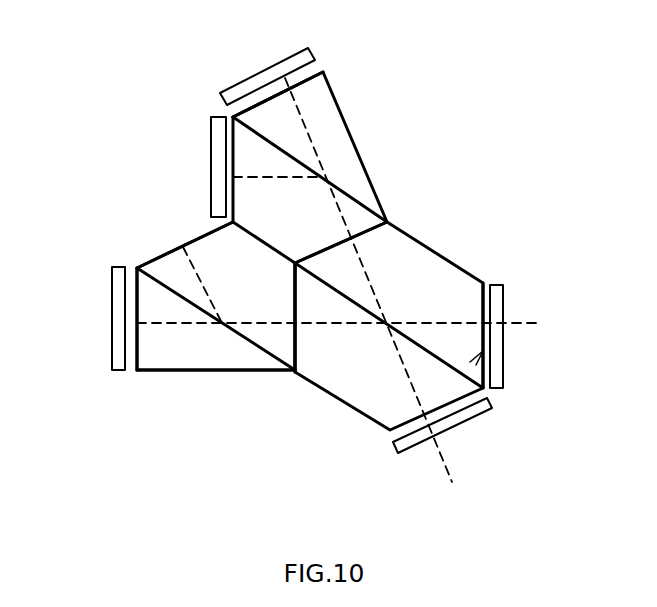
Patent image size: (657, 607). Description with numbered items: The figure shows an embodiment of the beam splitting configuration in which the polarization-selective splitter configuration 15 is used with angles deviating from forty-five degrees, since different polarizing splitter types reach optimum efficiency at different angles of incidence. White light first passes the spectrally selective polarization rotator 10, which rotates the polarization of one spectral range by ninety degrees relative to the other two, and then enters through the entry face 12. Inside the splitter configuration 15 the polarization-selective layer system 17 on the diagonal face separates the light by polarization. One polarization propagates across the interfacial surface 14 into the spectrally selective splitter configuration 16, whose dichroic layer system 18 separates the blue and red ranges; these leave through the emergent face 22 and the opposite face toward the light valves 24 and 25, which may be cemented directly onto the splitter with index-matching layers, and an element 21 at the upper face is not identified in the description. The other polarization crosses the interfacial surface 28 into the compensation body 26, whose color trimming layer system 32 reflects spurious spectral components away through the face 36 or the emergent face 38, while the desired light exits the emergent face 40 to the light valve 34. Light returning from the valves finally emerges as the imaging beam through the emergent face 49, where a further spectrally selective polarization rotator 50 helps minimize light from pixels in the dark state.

The spectrally selective polarization rotator 10 is at (497, 302).
The entry face 12 is at (470, 360).
The interfacial surface 14 is at (363, 233).
The polarization-selective splitter configuration 15 is at (323, 278).
The spectrally selective splitter configuration 16 is at (288, 130).
The polarization-selective layer system 17 is at (358, 303).
The dichroic or spectrally selective layer system 18 is at (337, 183).
The top window plate 21 is at (257, 102).
The emergent face 22 is at (232, 145).
The light valve 24 is at (292, 68).
The light valve 25 is at (220, 173).
The compensation body 26 is at (251, 278).
The interfacial surface 28 is at (297, 342).
The color trimming layer system 32 is at (245, 338).
The light valve 34 is at (118, 330).
The face 36 is at (162, 372).
The emergent face 38 is at (167, 252).
The emergent face 40 is at (137, 287).
The emergent face 49 is at (417, 413).
The spectrally selective polarization rotator 50 is at (462, 413).